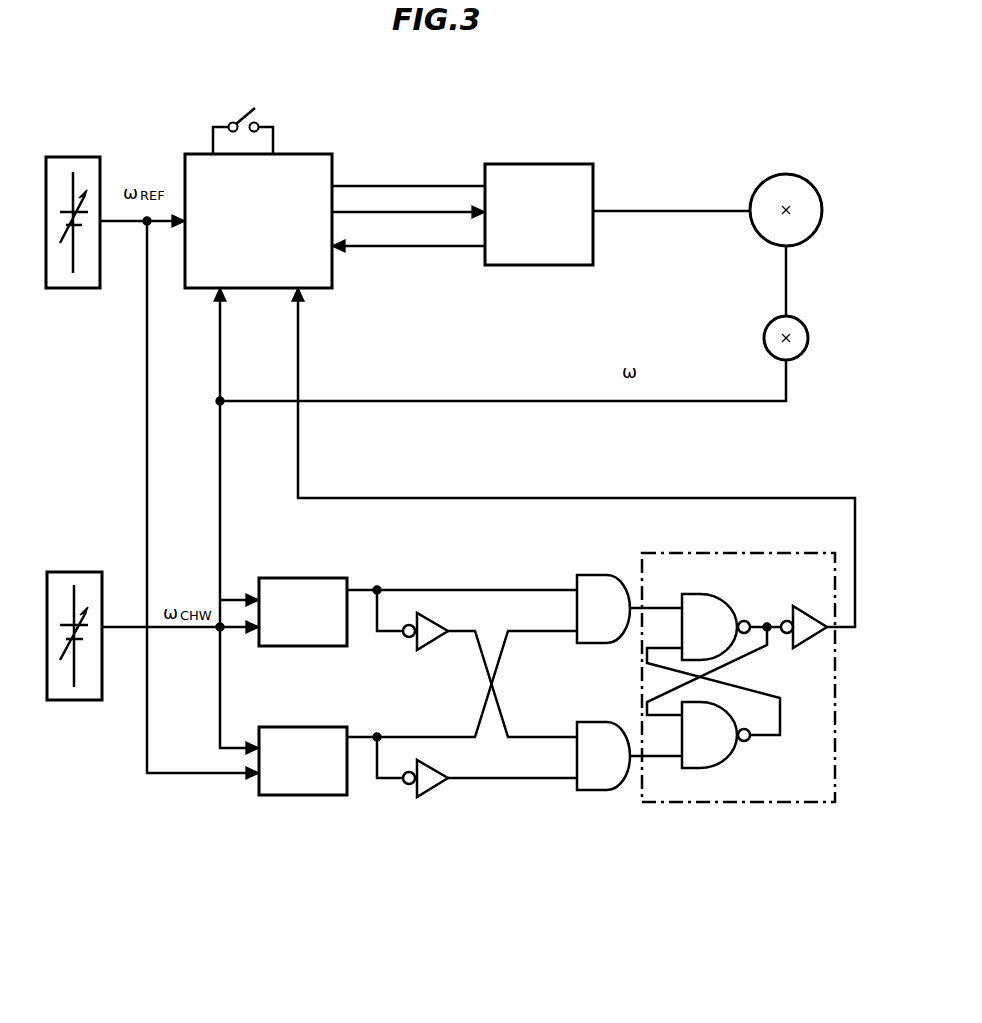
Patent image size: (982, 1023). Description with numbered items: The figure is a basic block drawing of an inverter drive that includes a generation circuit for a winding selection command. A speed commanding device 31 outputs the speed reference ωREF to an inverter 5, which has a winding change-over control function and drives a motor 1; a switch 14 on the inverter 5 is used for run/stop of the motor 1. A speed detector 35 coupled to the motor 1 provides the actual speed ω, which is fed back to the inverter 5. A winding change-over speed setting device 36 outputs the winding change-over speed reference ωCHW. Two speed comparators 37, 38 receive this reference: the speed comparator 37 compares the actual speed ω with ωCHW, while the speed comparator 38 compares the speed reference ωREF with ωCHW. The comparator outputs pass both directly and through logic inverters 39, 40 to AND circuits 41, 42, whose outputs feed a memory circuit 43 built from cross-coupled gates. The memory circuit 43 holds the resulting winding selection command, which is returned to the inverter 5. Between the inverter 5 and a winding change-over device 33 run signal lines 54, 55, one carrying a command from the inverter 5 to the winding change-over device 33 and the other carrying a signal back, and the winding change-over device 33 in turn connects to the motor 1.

The motor 1 is at (798, 173).
The inverter 5 is at (310, 150).
The switch 14 is at (255, 121).
The speed commanding device 31 is at (82, 157).
The winding change-over device 33 is at (540, 164).
The speed detector 35 is at (808, 318).
The winding change-over speed setting device 36 is at (80, 700).
The speed comparator 37 is at (297, 578).
The speed comparator 38 is at (295, 795).
The logic inverter 39 is at (433, 642).
The logic inverter 40 is at (433, 790).
The AND circuit 41 is at (602, 575).
The AND circuit 42 is at (600, 785).
The memory circuit 43 is at (737, 802).
The winding change-over completion signal line 54 is at (392, 246).
The winding change-over command signal line 55 is at (447, 212).